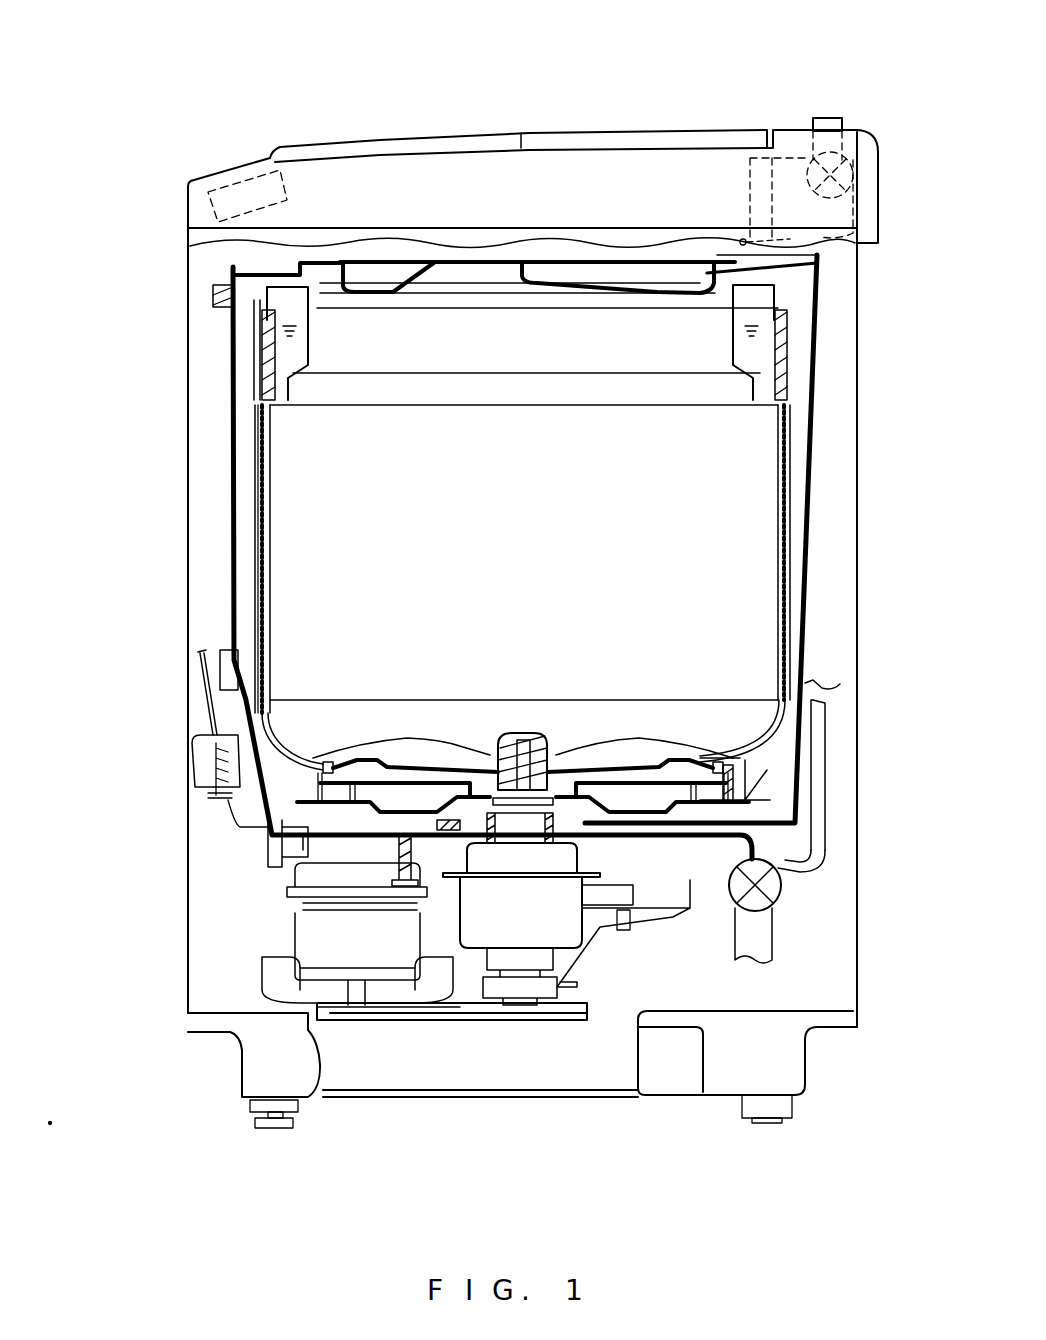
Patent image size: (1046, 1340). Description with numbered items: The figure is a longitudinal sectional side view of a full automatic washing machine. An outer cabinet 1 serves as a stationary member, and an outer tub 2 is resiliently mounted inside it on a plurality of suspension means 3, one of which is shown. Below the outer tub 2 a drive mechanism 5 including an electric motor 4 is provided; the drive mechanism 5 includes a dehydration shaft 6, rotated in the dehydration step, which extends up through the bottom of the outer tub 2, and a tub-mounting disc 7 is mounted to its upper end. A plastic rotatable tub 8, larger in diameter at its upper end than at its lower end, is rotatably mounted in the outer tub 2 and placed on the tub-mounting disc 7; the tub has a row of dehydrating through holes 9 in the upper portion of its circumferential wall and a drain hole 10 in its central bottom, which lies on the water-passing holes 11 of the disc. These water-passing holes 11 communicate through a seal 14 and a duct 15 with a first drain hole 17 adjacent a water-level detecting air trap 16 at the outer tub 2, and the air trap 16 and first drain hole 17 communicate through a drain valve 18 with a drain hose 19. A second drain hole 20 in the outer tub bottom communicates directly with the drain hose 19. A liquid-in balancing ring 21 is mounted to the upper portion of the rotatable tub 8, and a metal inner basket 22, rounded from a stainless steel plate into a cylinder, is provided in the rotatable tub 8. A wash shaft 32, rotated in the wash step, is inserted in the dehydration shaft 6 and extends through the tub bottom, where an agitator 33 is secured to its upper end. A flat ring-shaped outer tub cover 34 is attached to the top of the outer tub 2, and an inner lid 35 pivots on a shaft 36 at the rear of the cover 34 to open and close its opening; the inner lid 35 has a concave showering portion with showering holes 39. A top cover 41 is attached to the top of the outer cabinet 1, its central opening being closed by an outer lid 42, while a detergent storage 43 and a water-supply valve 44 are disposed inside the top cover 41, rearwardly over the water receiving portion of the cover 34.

The outer cabinet 1 is at (188, 420).
The outer tub 2 is at (232, 463).
The suspension means 3 is at (198, 732).
The electric motor 4 is at (298, 932).
The drive mechanism 5 is at (480, 1030).
The dehydration shaft 6 is at (555, 843).
The tub-mounting disc 7 is at (620, 790).
The rotatable tub 8 is at (255, 513).
The dehydrating through holes 9 is at (258, 355).
The drain hole 10 is at (483, 775).
The water-passing holes 11 is at (490, 750).
The seal 14 is at (560, 760).
The duct 15 is at (705, 815).
The water-level detecting air trap 16 is at (808, 806).
The first drain hole 17 is at (790, 835).
The drain valve 18 is at (775, 892).
The drain hose 19 is at (775, 935).
The second drain hole 20 is at (275, 848).
The liquid-in balancing ring 21 is at (300, 338).
The inner basket 22 is at (270, 470).
The wash shaft 32 is at (550, 745).
The agitator 33 is at (408, 738).
The outer tub cover 34 is at (322, 262).
The inner lid 35 is at (462, 255).
The shaft 36 is at (712, 268).
The showering holes 39 is at (654, 296).
The top cover 41 is at (596, 165).
The outer lid 42 is at (530, 133).
The detergent storage 43 is at (752, 138).
The water-supply valve 44 is at (852, 160).